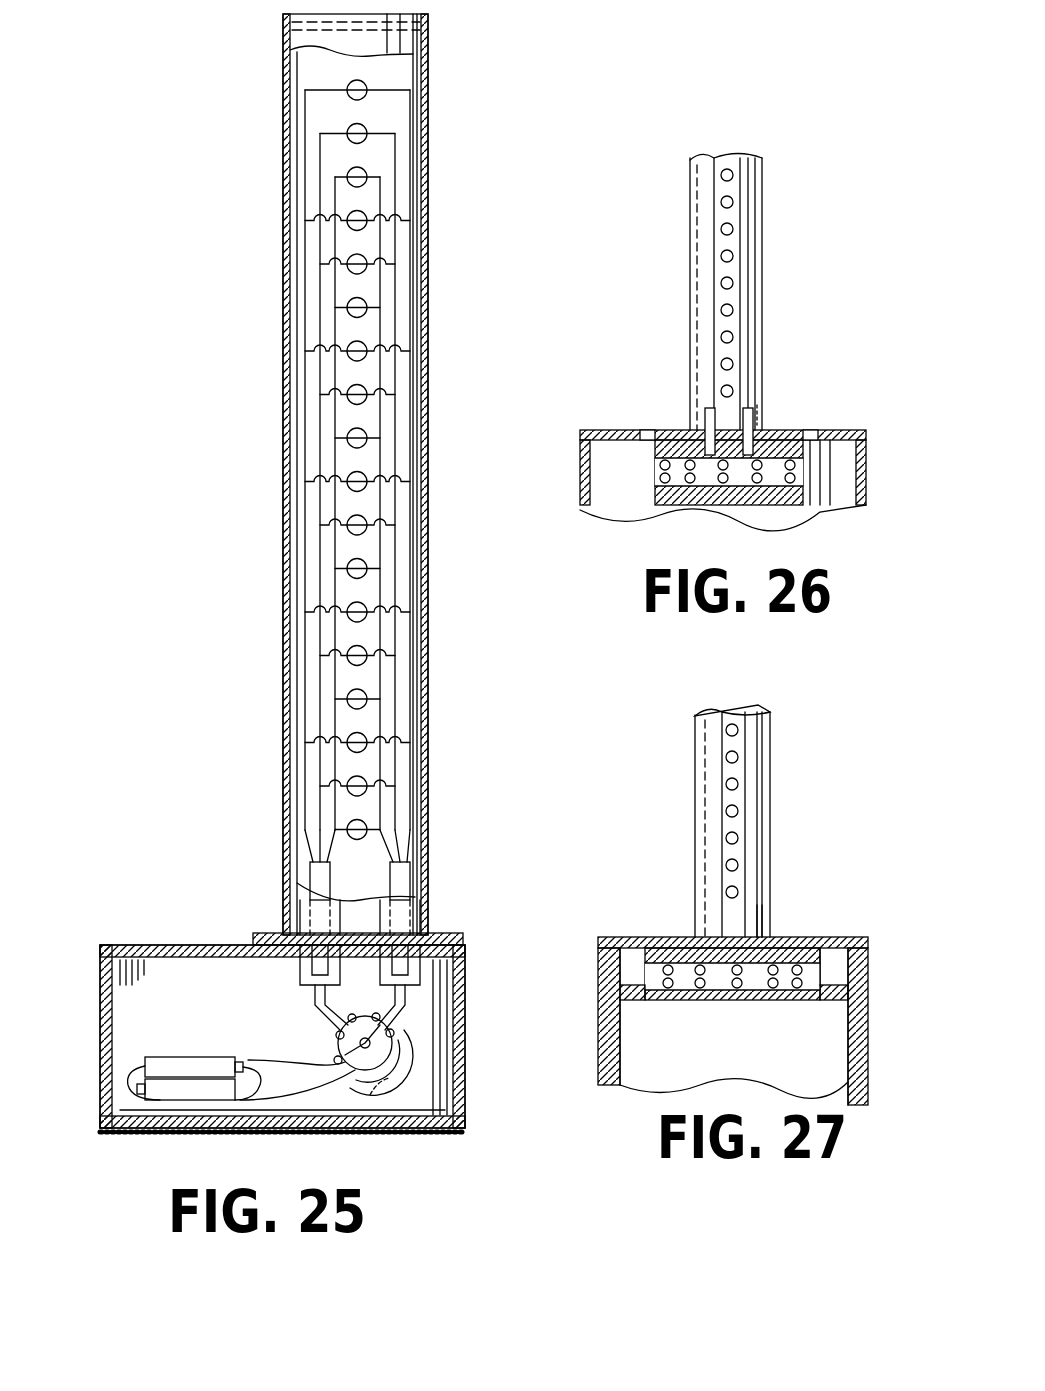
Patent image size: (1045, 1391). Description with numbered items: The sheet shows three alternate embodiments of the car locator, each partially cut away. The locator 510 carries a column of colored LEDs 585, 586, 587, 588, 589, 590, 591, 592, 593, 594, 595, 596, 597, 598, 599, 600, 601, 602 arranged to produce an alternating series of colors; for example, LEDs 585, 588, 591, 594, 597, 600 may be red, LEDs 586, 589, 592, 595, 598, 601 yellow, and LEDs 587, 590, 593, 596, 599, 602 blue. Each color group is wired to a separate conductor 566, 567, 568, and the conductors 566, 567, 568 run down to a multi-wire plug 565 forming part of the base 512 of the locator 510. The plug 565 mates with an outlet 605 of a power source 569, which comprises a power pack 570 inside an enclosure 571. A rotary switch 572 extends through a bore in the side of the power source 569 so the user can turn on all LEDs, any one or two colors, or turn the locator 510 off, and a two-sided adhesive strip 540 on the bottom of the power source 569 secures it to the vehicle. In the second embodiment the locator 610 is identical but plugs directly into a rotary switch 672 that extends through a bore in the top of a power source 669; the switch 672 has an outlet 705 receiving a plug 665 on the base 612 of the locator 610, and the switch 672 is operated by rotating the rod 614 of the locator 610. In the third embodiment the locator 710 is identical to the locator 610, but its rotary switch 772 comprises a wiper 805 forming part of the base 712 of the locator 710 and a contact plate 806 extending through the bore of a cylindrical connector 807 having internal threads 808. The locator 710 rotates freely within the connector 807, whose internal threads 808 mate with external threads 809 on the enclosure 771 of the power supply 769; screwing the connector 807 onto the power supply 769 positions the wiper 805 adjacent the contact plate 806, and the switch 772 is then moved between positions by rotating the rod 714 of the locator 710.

In FIG. 25, the locator 510 is at (276, 408).
In FIG. 25, the base 512 is at (430, 936).
In FIG. 25, the two-sided adhesive strip 540 is at (250, 1128).
In FIG. 25, the multi-wire plug 565 is at (318, 878).
In FIG. 25, the conductor 566 is at (300, 145).
In FIG. 25, the conductor 567 is at (305, 312).
In FIG. 25, the conductor 568 is at (307, 565).
In FIG. 25, the power source 569 is at (101, 985).
In FIG. 25, the power pack 570 is at (165, 1090).
In FIG. 25, the enclosure 571 is at (185, 945).
In FIG. 25, the rotary switch 572 is at (375, 1082).
In FIG. 25, the LED 585 is at (367, 88).
In FIG. 25, the LED 586 is at (367, 132).
In FIG. 25, the LED 587 is at (367, 176).
In FIG. 25, the LED 588 is at (367, 220).
In FIG. 25, the LED 589 is at (367, 263).
In FIG. 25, the LED 590 is at (367, 307).
In FIG. 25, the LED 591 is at (367, 350).
In FIG. 25, the LED 592 is at (367, 394).
In FIG. 25, the LED 593 is at (367, 437).
In FIG. 25, the LED 594 is at (367, 481).
In FIG. 25, the LED 595 is at (367, 524).
In FIG. 25, the LED 596 is at (367, 568).
In FIG. 25, the LED 597 is at (367, 611).
In FIG. 25, the LED 598 is at (367, 655).
In FIG. 25, the LED 599 is at (367, 698).
In FIG. 25, the LED 600 is at (367, 742).
In FIG. 25, the LED 601 is at (367, 785).
In FIG. 25, the LED 602 is at (367, 829).
In FIG. 25, the outlet 605 is at (305, 985).
In FIG. 26, the locator 610 is at (775, 290).
In FIG. 26, the base 612 is at (695, 433).
In FIG. 26, the rod 614 is at (745, 207).
In FIG. 26, the plug 665 is at (708, 420).
In FIG. 26, the power source 669 is at (905, 412).
In FIG. 26, the rotary switch 672 is at (810, 470).
In FIG. 26, the outlet 705 is at (648, 432).
In FIG. 27, the locator 710 is at (778, 808).
In FIG. 27, the base 712 is at (752, 925).
In FIG. 27, the rod 714 is at (698, 783).
In FIG. 27, the power supply 769 is at (872, 1088).
In FIG. 27, the enclosure 771 is at (598, 1060).
In FIG. 27, the rotary switch 772 is at (630, 945).
In FIG. 27, the wiper 805 is at (820, 945).
In FIG. 27, the contact plate 806 is at (770, 995).
In FIG. 27, the cylindrical connector 807 is at (868, 955).
In FIG. 27, the internal threads 808 is at (868, 988).
In FIG. 27, the external threads 809 is at (622, 1000).